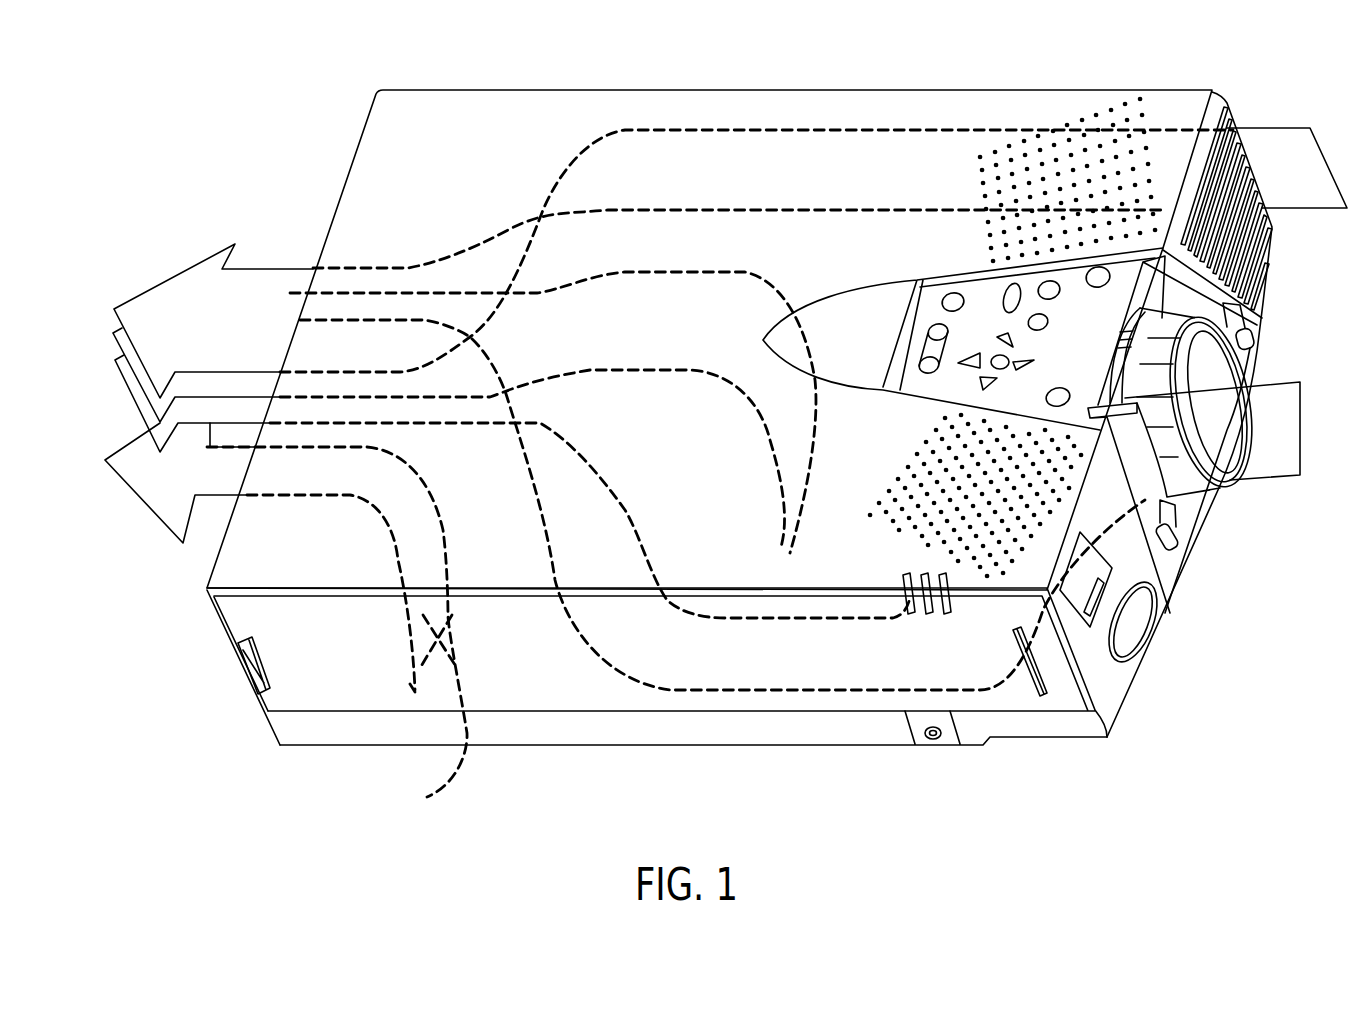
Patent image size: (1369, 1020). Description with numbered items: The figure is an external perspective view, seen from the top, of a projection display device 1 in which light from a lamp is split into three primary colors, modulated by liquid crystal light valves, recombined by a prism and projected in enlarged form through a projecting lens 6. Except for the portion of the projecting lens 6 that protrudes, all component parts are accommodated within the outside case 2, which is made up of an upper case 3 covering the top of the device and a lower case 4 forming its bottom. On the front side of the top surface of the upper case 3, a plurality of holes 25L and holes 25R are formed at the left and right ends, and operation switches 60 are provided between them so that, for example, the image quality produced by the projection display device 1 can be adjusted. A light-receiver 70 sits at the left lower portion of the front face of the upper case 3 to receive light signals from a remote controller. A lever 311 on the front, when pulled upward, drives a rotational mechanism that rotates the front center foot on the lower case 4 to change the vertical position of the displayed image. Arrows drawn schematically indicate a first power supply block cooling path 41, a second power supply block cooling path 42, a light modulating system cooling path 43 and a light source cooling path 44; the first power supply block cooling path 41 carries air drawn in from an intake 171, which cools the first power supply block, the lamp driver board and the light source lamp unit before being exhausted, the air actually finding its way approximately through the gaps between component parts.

The projection display device 1 is at (301, 144).
The outside case 2 is at (197, 699).
The upper case 3 is at (232, 617).
The lower case 4 is at (330, 735).
The projecting lens 6 is at (1207, 445).
The holes 25L is at (1095, 113).
The holes 25R is at (915, 468).
The first power supply block cooling path 41 is at (683, 147).
The second power supply block cooling path 42 is at (747, 677).
The light modulating system cooling path 43 is at (631, 293).
The light source cooling path 44 is at (337, 631).
The operation switches 60 is at (985, 293).
The light-receiver 70 is at (1133, 630).
The intake 171 is at (1247, 162).
The lever 311 is at (1255, 335).